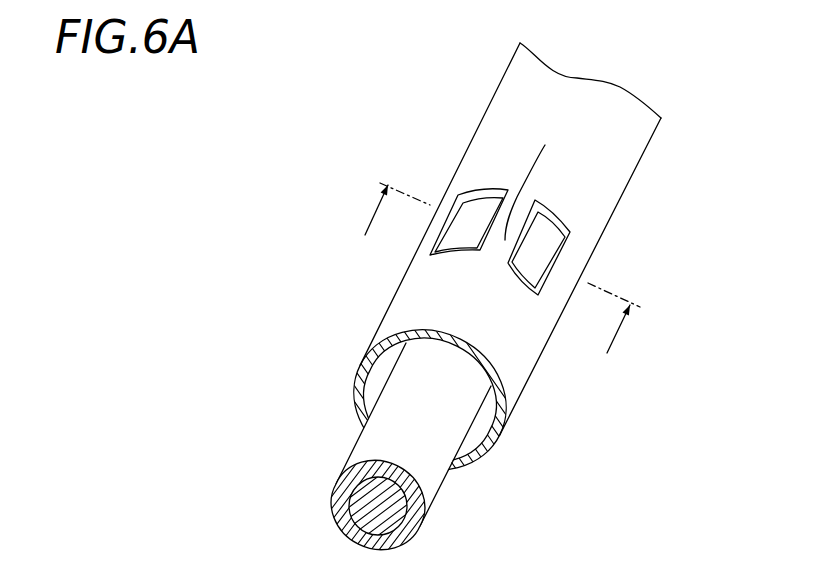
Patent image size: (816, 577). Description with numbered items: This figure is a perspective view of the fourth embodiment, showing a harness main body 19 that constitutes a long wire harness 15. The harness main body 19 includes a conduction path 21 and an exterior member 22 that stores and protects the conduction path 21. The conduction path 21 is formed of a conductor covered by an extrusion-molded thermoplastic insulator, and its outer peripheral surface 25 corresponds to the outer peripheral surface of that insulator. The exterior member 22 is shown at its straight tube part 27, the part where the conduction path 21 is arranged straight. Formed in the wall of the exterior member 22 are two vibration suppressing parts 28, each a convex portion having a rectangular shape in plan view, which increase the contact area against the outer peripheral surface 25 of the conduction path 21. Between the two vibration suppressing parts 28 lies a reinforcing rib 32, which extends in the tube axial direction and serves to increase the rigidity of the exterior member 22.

The wire harness 15 is at (469, 298).
The harness main body 19 is at (328, 157).
The conduction path 21 is at (377, 458).
The exterior member 22 is at (625, 153).
The outer peripheral surface of the conduction path 25 is at (423, 473).
The straight tube part 27 is at (588, 217).
The vibration suppressing part 28 is at (473, 232).
The reinforcing rib 32 is at (545, 145).